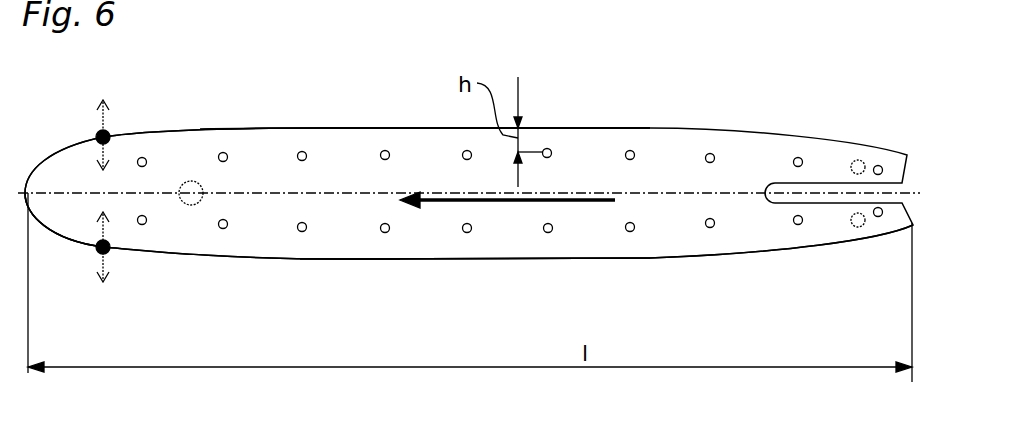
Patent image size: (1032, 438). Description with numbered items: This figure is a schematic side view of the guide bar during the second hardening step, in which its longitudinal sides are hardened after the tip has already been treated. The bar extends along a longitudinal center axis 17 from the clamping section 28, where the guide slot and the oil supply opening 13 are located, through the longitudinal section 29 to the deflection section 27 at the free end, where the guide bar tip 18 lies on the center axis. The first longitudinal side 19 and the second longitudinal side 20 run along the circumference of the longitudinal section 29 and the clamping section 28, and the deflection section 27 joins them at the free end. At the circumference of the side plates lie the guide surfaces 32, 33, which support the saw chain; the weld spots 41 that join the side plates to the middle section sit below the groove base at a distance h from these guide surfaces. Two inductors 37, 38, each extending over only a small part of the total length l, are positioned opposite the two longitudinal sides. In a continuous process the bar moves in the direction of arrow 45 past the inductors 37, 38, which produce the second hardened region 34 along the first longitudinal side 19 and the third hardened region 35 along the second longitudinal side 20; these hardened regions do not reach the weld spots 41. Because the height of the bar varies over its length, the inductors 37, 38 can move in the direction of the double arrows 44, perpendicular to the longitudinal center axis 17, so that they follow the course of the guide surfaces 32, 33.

The oil supply opening 13 is at (843, 148).
The longitudinal center axis 17 is at (667, 195).
The guide bar tip 18 is at (25, 188).
The first longitudinal side 19 is at (285, 128).
The second longitudinal side 20 is at (263, 258).
The deflection section 27 is at (62, 223).
The clamping section 28 is at (823, 233).
The longitudinal section 29 is at (415, 232).
The first guide surface 32 is at (367, 128).
The second guide surface 33 is at (367, 128).
The second hardened region 34 is at (248, 135).
The third hardened region 35 is at (342, 258).
The inductor 37 is at (110, 135).
The inductor 38 is at (105, 252).
The weld spots 41 is at (795, 158).
The double arrows 44 is at (97, 228).
The arrow 45 is at (503, 200).